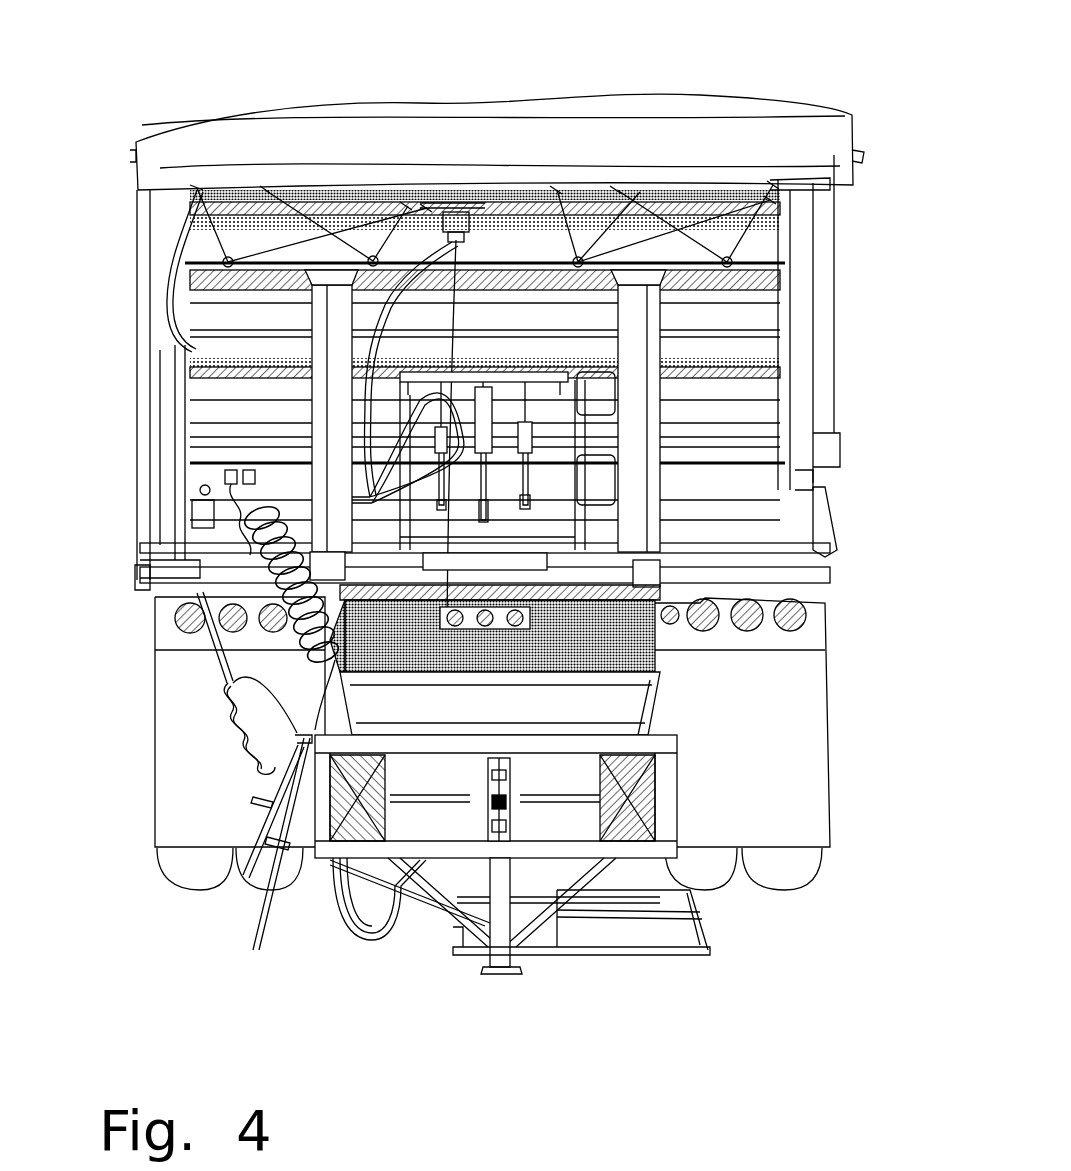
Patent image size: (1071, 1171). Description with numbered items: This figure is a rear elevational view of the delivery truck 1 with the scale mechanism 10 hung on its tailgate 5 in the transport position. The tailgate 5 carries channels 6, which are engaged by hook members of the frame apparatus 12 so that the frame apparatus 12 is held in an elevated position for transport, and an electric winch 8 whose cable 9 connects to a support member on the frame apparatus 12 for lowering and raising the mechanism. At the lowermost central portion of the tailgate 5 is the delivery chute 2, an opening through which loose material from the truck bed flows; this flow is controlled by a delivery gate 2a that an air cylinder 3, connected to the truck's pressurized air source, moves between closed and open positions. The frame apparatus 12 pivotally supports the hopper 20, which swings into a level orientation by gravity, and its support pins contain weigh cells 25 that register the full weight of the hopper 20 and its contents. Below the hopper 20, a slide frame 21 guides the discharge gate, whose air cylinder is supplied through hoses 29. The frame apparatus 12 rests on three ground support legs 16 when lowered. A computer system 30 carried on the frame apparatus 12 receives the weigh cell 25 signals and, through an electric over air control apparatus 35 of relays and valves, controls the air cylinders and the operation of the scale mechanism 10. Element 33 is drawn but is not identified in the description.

The delivery truck 1 is at (632, 82).
The delivery chute 2 is at (553, 565).
The delivery gate 2a is at (525, 537).
The air cylinder 3 is at (490, 373).
The tailgate 5 is at (797, 330).
The channels 6 is at (333, 400).
The electric winch 8 is at (470, 214).
The cable 9 is at (460, 322).
The scale mechanism 10 is at (725, 757).
The frame apparatus 12 is at (668, 825).
The ground support legs 16 is at (518, 965).
The hopper 20 is at (640, 697).
The slide frame 21 is at (676, 940).
The weigh cells 25 is at (422, 860).
The hoses 29 is at (297, 647).
The computer system 30 is at (248, 771).
The coiled cable 33 is at (233, 683).
The electric over air control apparatus 35 is at (231, 818).